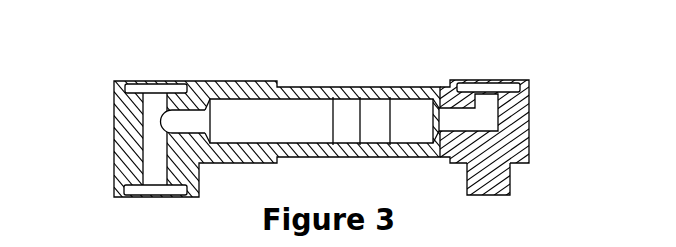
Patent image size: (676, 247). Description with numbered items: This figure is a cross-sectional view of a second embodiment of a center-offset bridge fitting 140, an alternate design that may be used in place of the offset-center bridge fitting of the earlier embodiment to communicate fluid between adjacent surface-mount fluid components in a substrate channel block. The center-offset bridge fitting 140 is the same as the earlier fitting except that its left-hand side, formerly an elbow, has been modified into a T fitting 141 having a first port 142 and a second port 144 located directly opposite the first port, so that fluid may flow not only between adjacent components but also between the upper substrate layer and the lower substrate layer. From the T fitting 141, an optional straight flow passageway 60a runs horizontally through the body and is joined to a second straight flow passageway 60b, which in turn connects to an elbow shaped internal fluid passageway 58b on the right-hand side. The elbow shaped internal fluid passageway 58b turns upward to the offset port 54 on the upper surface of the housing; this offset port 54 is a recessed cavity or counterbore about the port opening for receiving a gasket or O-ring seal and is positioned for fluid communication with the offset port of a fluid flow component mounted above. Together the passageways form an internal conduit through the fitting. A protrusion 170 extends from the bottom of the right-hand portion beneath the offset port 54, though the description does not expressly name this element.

The center-offset bridge fitting 140 is at (306, 56).
The T fitting 141 is at (104, 137).
The first port 142 is at (145, 88).
The second port 144 is at (147, 188).
The straight flow passageway 60a is at (313, 142).
The straight flow passageway 60b is at (375, 145).
The offset port 54 is at (492, 87).
The elbow shaped internal fluid passageway 58b is at (490, 118).
The lower protrusion 170 is at (490, 178).